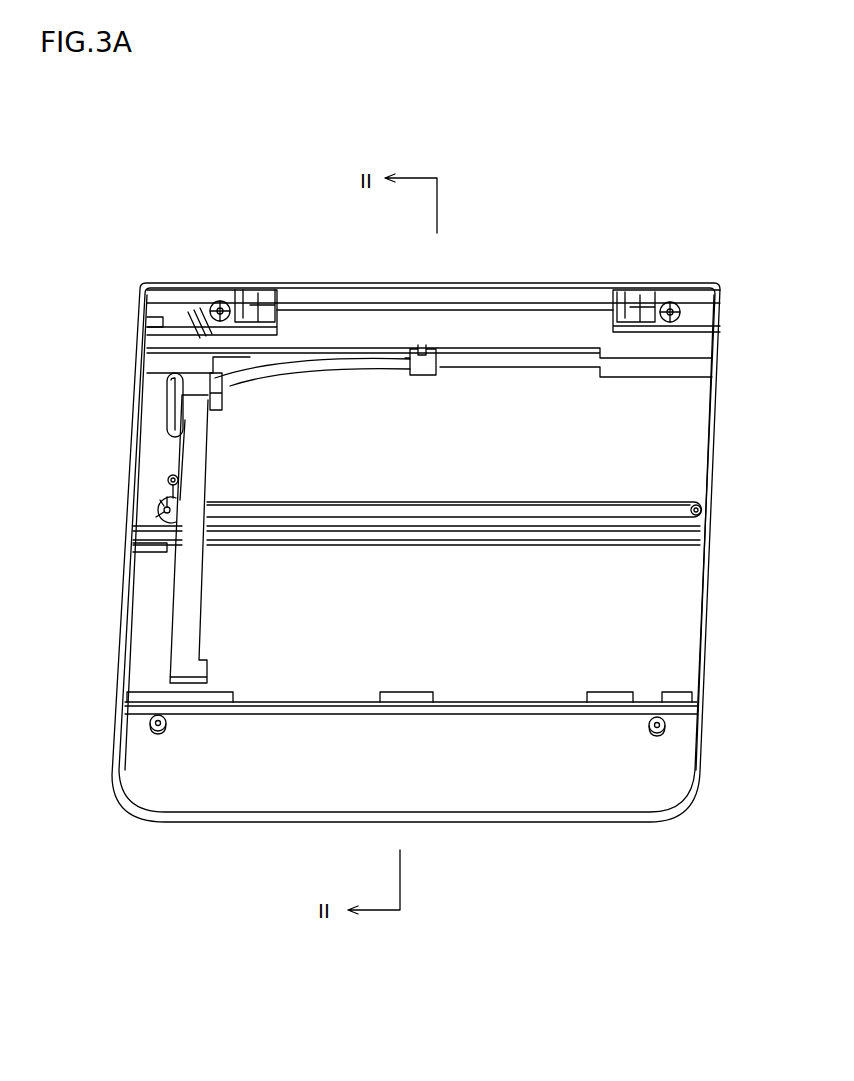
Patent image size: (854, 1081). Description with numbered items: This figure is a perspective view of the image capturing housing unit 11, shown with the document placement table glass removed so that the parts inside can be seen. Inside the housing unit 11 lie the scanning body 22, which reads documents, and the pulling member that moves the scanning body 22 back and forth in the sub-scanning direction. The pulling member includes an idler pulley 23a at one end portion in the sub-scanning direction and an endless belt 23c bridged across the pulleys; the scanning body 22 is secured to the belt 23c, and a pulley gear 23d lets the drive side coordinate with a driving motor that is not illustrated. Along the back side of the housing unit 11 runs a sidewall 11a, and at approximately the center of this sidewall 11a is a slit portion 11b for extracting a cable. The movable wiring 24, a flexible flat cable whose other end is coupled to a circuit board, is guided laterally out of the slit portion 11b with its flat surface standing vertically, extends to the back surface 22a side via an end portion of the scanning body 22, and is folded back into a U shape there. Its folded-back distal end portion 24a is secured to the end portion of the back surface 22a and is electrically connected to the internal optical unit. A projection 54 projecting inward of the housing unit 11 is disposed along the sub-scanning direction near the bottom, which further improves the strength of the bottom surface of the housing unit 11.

The image capturing housing unit 11 is at (416, 552).
The sidewall 11a is at (512, 358).
The slit portion 11b is at (435, 355).
The scanning body 22 is at (177, 606).
The back surface 22a is at (172, 458).
The idler pulley 23a is at (704, 511).
The endless belt 23c is at (655, 502).
The pulley gear 23d is at (157, 495).
The movable wiring 24 is at (330, 355).
The folded-back distal end portion 24a is at (176, 394).
The projection 54 is at (455, 541).